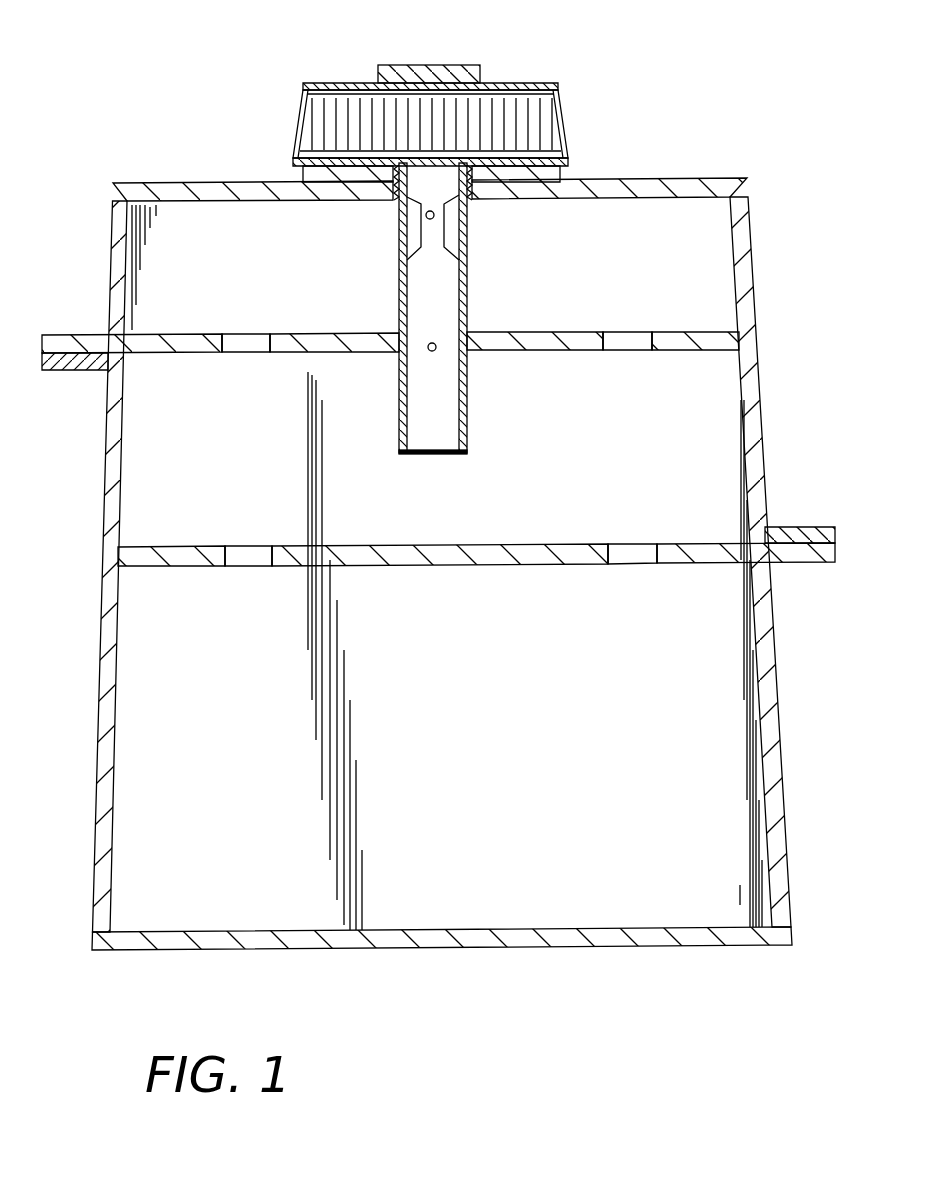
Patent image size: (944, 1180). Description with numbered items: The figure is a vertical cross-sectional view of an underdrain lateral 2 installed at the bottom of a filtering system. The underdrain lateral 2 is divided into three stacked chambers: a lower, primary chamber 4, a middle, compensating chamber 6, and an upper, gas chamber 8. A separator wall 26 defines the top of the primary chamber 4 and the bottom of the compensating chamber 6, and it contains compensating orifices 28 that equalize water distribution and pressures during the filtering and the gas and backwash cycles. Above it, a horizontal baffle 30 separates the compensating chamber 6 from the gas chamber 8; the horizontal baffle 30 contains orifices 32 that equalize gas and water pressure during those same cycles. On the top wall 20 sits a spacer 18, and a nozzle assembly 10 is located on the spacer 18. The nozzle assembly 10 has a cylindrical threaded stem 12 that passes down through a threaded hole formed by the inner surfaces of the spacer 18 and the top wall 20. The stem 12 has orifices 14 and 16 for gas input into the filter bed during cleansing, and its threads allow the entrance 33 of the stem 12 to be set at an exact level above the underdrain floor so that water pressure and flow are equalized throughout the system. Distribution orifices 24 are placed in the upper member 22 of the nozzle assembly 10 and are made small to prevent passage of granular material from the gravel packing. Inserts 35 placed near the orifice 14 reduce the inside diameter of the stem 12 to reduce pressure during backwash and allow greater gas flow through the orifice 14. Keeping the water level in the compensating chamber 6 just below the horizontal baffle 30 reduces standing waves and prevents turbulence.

The underdrain lateral 2 is at (712, 126).
The lower, primary chamber 4 is at (743, 735).
The middle, compensating chamber 6 is at (735, 425).
The upper, gas chamber 8 is at (722, 255).
The nozzle assembly 10 is at (436, 83).
The threaded stem 12 is at (434, 341).
The orifice 14 is at (437, 217).
The orifice 16 is at (436, 350).
The spacer 18 is at (576, 170).
The top wall 20 is at (194, 183).
The upper member 22 is at (560, 95).
The distribution orifices 24 is at (312, 115).
The separator wall 26 is at (510, 545).
The compensating orifices 28 is at (246, 562).
The horizontal baffle 30 is at (279, 334).
The orifices 32 is at (247, 347).
The entrance 33 is at (440, 456).
The inserts 35 is at (412, 232).